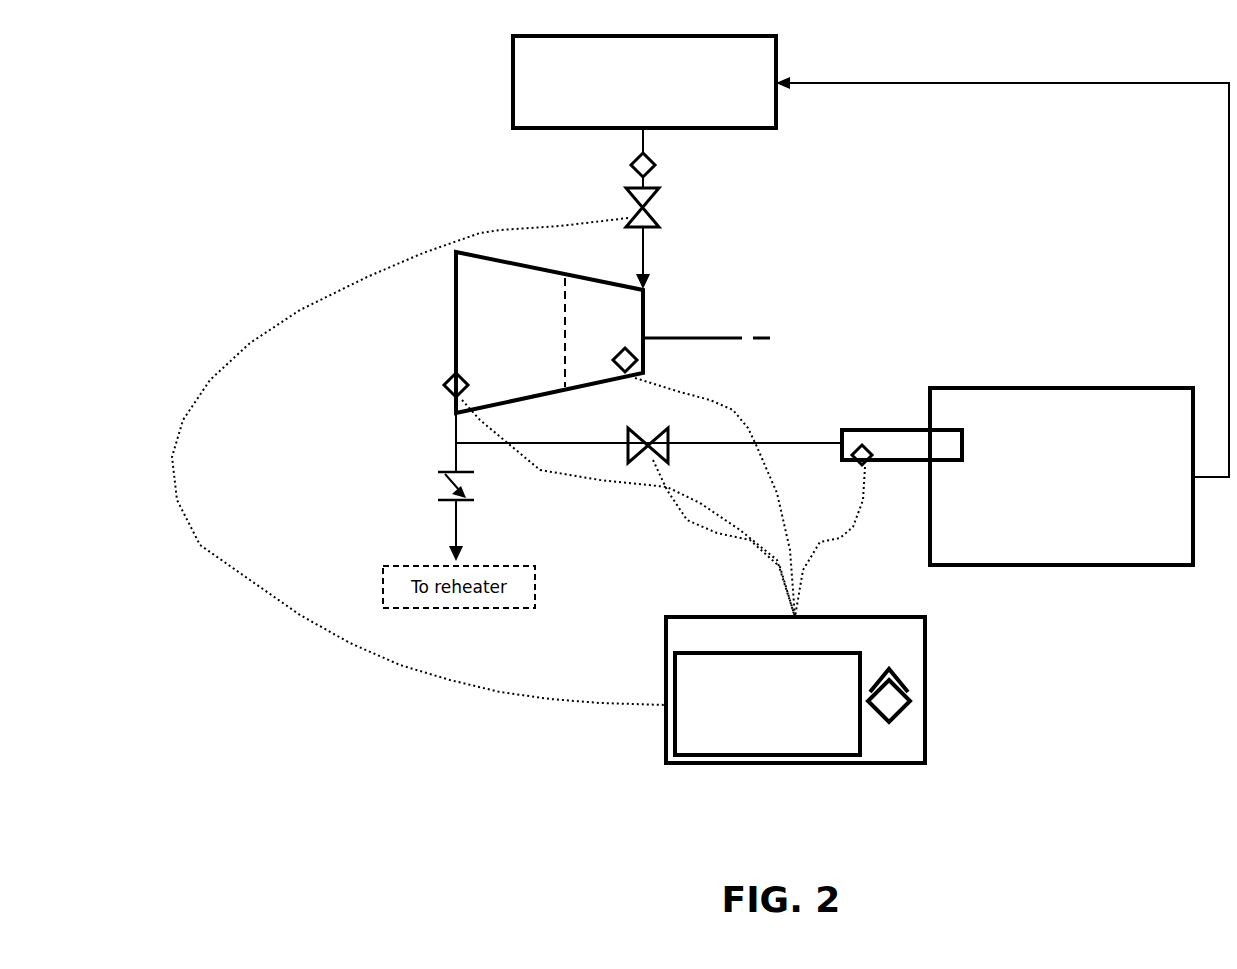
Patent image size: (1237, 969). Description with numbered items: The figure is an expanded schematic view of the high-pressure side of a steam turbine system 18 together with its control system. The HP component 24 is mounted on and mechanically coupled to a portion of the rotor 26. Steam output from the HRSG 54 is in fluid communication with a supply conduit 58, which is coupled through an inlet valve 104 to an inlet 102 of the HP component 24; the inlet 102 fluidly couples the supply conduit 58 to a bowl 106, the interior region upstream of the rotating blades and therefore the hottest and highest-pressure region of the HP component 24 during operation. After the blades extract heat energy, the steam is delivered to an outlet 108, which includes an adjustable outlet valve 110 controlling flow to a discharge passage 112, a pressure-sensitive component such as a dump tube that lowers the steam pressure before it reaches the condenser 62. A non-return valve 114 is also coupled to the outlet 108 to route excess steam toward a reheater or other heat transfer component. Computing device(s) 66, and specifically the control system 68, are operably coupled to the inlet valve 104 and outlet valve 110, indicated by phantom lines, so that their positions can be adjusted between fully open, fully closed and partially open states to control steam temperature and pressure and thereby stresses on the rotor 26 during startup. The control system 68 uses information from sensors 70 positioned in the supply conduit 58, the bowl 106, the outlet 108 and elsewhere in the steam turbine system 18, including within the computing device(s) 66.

The steam turbine system 18 is at (384, 357).
The HP component 24 is at (457, 265).
The rotor 26 is at (727, 336).
The HRSG 54 is at (644, 82).
The supply conduit 58 is at (650, 152).
The condenser 62 is at (1061, 476).
The computing device(s) 66 is at (795, 690).
The control system 68 is at (767, 704).
The sensor(s) 70 is at (631, 165).
The inlet 102 is at (644, 266).
The inlet valve 104 is at (660, 225).
The bowl 106 is at (594, 332).
The outlet 108 is at (456, 428).
The outlet valve 110 is at (645, 432).
The discharge passage 112 is at (893, 430).
The non-return valve 114 is at (467, 500).